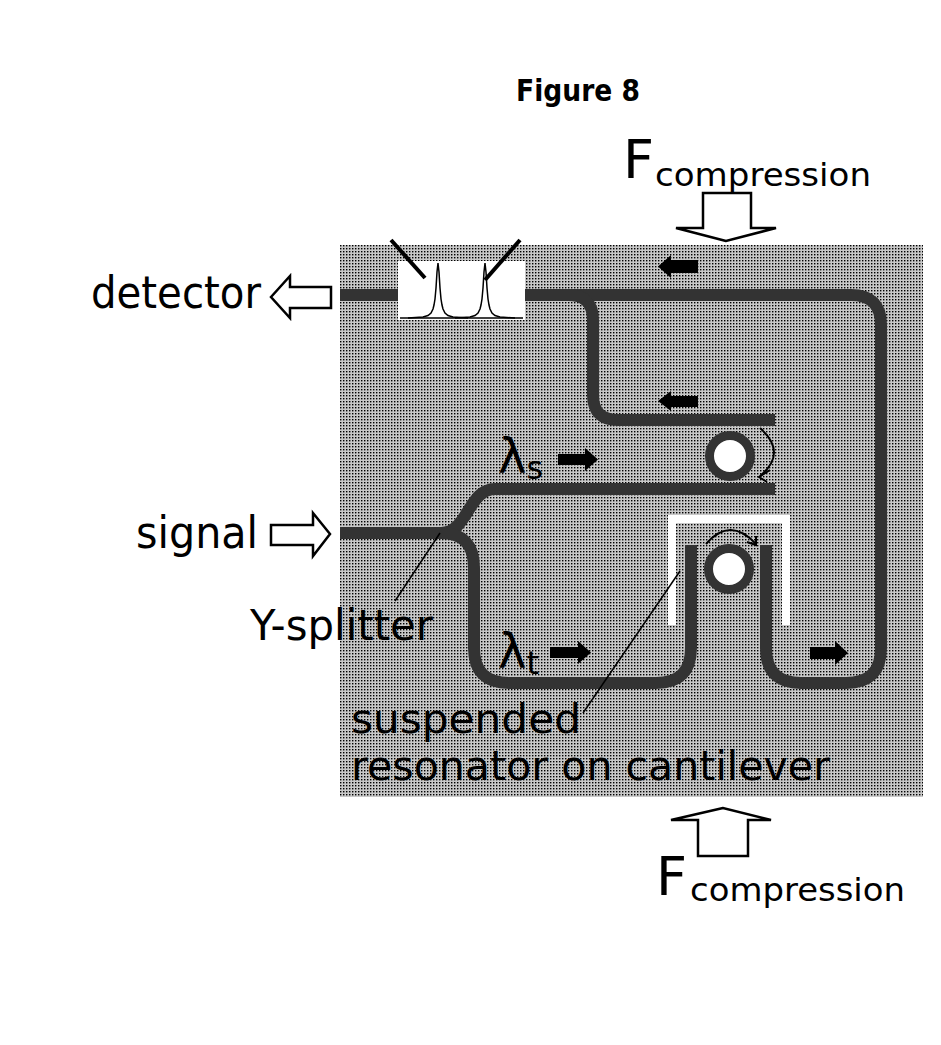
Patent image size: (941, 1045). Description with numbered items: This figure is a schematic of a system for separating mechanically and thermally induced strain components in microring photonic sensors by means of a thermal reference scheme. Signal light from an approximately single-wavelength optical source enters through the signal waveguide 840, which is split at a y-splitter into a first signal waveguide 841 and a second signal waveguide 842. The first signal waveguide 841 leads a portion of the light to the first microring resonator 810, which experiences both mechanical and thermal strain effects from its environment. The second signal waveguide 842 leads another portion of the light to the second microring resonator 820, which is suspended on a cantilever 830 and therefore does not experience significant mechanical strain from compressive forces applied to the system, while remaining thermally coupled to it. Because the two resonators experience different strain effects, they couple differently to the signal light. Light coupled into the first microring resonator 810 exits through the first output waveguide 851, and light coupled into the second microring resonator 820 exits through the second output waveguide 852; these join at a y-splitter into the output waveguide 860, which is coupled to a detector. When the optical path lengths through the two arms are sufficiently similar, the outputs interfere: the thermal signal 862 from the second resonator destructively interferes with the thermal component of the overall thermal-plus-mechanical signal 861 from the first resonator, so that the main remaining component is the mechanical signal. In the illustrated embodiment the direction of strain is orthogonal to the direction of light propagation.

The first microring resonator 810 is at (722, 425).
The second microring resonator 820 is at (721, 578).
The cantilever 830 is at (780, 578).
The signal waveguide 840 is at (375, 518).
The first signal waveguide 841 is at (577, 484).
The second signal waveguide 842 is at (468, 612).
The first output waveguide 851 is at (712, 290).
The second output waveguide 852 is at (590, 378).
The output waveguide 860 is at (362, 293).
The overall (thermal plus mechanical) signal 861 is at (340, 188).
The thermal signal 862 is at (510, 188).